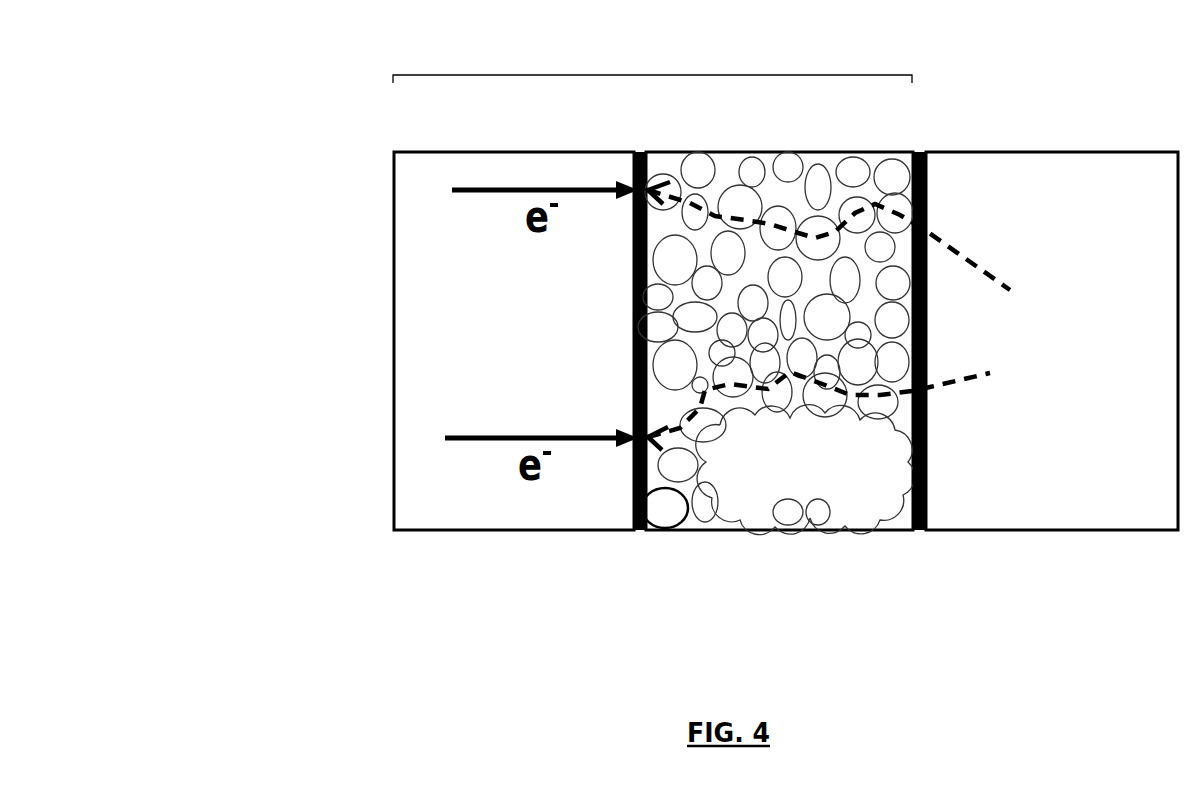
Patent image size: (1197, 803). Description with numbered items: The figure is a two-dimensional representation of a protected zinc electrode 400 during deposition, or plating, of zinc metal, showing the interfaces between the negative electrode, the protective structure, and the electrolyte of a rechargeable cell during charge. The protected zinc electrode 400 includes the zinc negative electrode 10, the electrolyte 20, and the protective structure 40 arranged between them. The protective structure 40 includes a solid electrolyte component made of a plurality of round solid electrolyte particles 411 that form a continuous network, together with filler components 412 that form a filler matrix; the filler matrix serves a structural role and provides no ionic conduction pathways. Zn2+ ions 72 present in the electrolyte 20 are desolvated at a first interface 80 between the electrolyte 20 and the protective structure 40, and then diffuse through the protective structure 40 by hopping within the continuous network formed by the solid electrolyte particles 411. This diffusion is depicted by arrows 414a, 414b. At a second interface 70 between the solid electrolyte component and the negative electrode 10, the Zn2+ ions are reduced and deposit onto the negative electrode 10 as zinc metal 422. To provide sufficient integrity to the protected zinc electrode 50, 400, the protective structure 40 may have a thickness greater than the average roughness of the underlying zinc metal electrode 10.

The protected zinc electrode 400 is at (127, 46).
The protected zinc electrode 50 is at (653, 75).
The negative electrode 10 is at (541, 150).
The protective structure 40 is at (783, 150).
The electrolyte 20 is at (1031, 150).
The second interface 70 is at (637, 533).
The first interface 80 is at (925, 533).
The solid electrolyte particles 411 is at (667, 535).
The filler components 412 is at (742, 521).
The Zn2+ ions 72 is at (806, 470).
The arrow 414a is at (952, 388).
The arrow 414b is at (951, 224).
The zinc metal 422 is at (510, 370).